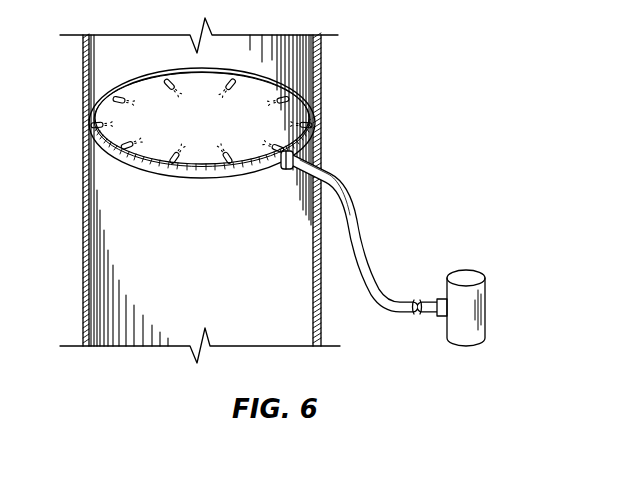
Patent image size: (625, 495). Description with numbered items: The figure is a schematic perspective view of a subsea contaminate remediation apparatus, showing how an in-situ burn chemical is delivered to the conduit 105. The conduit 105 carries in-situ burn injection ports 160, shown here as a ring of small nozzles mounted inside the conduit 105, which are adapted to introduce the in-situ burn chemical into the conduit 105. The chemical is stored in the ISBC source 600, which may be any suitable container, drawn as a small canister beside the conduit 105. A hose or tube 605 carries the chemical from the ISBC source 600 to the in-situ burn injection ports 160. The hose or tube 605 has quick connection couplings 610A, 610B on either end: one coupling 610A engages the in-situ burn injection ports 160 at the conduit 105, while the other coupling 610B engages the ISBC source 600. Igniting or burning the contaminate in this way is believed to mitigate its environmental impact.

The conduit 105 is at (84, 190).
The in-situ burn injection port 160 is at (306, 128).
The hose or tube 605 is at (360, 217).
The quick connection coupling 610A is at (284, 166).
The quick connection coupling 610B is at (440, 316).
The ISBC source 600 is at (465, 282).